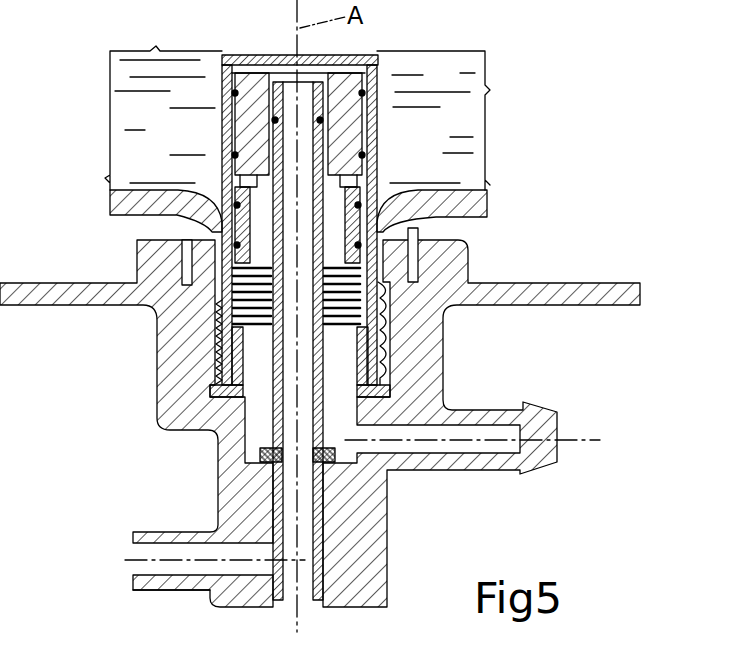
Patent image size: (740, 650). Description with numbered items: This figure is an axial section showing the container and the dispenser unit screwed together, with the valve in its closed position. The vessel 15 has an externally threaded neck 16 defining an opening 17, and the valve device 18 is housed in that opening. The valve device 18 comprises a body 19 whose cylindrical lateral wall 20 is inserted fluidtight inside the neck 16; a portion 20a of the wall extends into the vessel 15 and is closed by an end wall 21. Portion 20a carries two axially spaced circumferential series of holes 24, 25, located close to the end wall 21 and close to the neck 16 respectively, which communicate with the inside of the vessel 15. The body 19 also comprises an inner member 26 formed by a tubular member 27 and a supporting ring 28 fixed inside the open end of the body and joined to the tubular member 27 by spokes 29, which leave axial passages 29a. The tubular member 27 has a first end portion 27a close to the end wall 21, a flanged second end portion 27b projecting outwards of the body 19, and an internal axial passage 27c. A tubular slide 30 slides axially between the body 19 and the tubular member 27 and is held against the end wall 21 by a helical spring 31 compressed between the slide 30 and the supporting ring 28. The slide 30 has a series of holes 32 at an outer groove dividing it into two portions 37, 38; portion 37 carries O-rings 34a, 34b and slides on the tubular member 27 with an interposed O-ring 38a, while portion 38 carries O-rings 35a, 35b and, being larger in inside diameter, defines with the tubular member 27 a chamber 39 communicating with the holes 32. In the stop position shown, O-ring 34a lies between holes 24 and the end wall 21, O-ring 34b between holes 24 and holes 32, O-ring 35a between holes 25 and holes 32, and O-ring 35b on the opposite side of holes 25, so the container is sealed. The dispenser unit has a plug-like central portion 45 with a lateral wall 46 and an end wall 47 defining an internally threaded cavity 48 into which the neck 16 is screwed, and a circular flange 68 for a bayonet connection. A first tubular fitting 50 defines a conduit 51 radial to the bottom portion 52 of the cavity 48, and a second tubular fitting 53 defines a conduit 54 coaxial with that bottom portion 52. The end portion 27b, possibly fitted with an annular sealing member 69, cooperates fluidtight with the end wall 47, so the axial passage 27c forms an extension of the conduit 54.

The vessel 15 is at (480, 204).
The neck 16 is at (225, 313).
The opening 17 is at (358, 400).
The valve device 18 is at (383, 62).
The body 19 is at (383, 142).
The cylindrical lateral wall 20 is at (386, 294).
The portion 20a is at (364, 93).
The end wall 21 is at (235, 68).
The holes 24 is at (226, 121).
The holes 25 is at (236, 246).
The inner member 26 is at (253, 437).
The tubular member 27 is at (255, 447).
The first end portion 27a is at (320, 85).
The second end portion 27b is at (330, 459).
The axial passage 27c is at (287, 132).
The supporting ring 28 is at (262, 383).
The spokes 29 is at (249, 350).
The axial passages 29a is at (212, 393).
The tubular slide 30 is at (374, 172).
The helical spring 31 is at (388, 330).
The holes 32 is at (388, 228).
The O-ring 34a is at (235, 93).
The O-ring 34b is at (235, 155).
The O-ring 35a is at (236, 206).
The O-ring 35b is at (215, 243).
The portion 37 is at (360, 110).
The portion 38 is at (418, 238).
The O-ring 38a is at (275, 120).
The chamber 39 is at (365, 252).
The central portion 45 is at (212, 513).
The lateral wall 46 is at (433, 398).
The end wall 47 is at (240, 595).
The cavity 48 is at (389, 364).
The first tubular fitting 50 is at (507, 464).
The conduit 51 is at (521, 432).
The bottom portion 52 is at (248, 462).
The second tubular fitting 53 is at (148, 590).
The conduit 54 is at (150, 547).
The circular flange 68 is at (615, 292).
The annular sealing member 69 is at (335, 500).